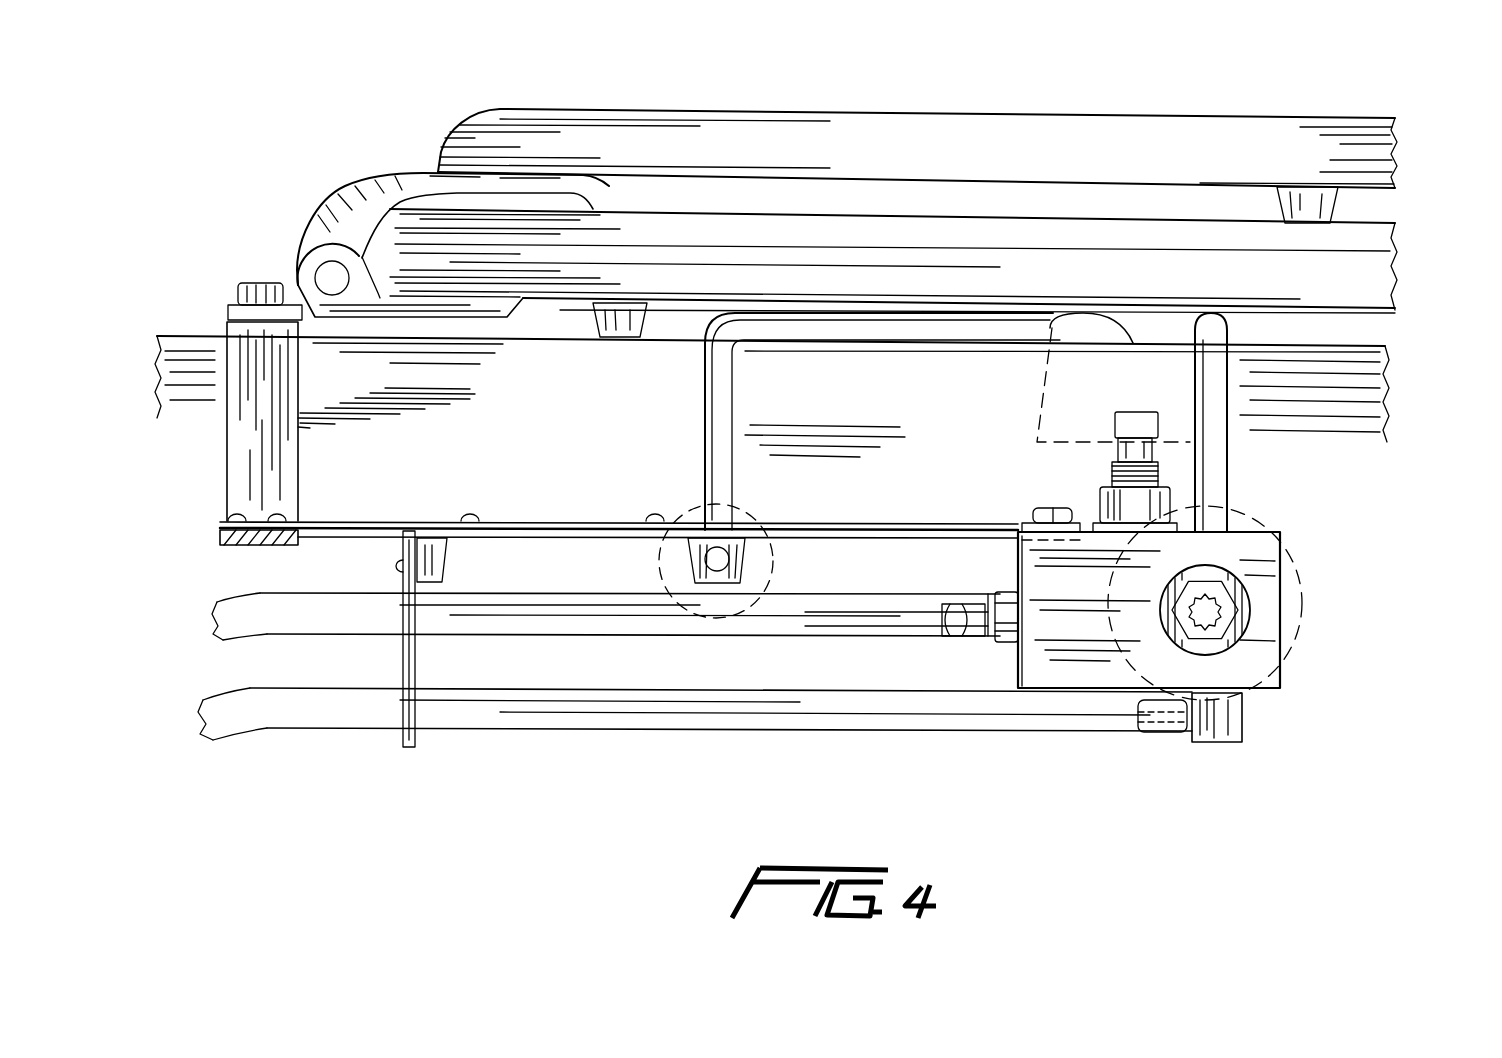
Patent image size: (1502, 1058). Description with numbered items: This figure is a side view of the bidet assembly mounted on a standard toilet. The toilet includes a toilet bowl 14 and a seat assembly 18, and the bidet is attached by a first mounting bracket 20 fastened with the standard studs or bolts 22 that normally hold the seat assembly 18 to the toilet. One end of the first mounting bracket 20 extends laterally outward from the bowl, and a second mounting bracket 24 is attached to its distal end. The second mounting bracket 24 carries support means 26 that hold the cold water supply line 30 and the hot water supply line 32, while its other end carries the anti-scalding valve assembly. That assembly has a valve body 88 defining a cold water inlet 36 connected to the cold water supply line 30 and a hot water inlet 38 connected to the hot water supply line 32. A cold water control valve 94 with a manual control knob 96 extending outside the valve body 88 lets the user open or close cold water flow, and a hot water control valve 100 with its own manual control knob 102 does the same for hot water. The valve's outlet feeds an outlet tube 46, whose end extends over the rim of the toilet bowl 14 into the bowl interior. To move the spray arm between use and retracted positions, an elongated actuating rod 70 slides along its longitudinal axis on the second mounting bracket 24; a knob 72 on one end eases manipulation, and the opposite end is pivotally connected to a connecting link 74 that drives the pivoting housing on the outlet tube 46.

The toilet bowl 14 is at (1385, 402).
The seat assembly 18 is at (856, 130).
The first mounting bracket 20 is at (228, 487).
The studs or bolts 22 is at (260, 282).
The second mounting bracket 24 is at (520, 522).
The support means 26 is at (397, 737).
The cold water supply line 30 is at (540, 620).
The hot water supply line 32 is at (560, 717).
The cold water inlet 36 is at (1017, 652).
The hot water inlet 38 is at (1245, 697).
The outlet tube 46 is at (1220, 468).
The actuating rod 70 is at (718, 573).
The knob 72 is at (750, 608).
The connecting link 74 is at (705, 427).
The valve body 88 is at (1040, 585).
The cold water control valve 94 is at (1125, 503).
The manual control knob 96 is at (1050, 378).
The hot water control valve 100 is at (1247, 633).
The manual control knob 102 is at (1303, 610).